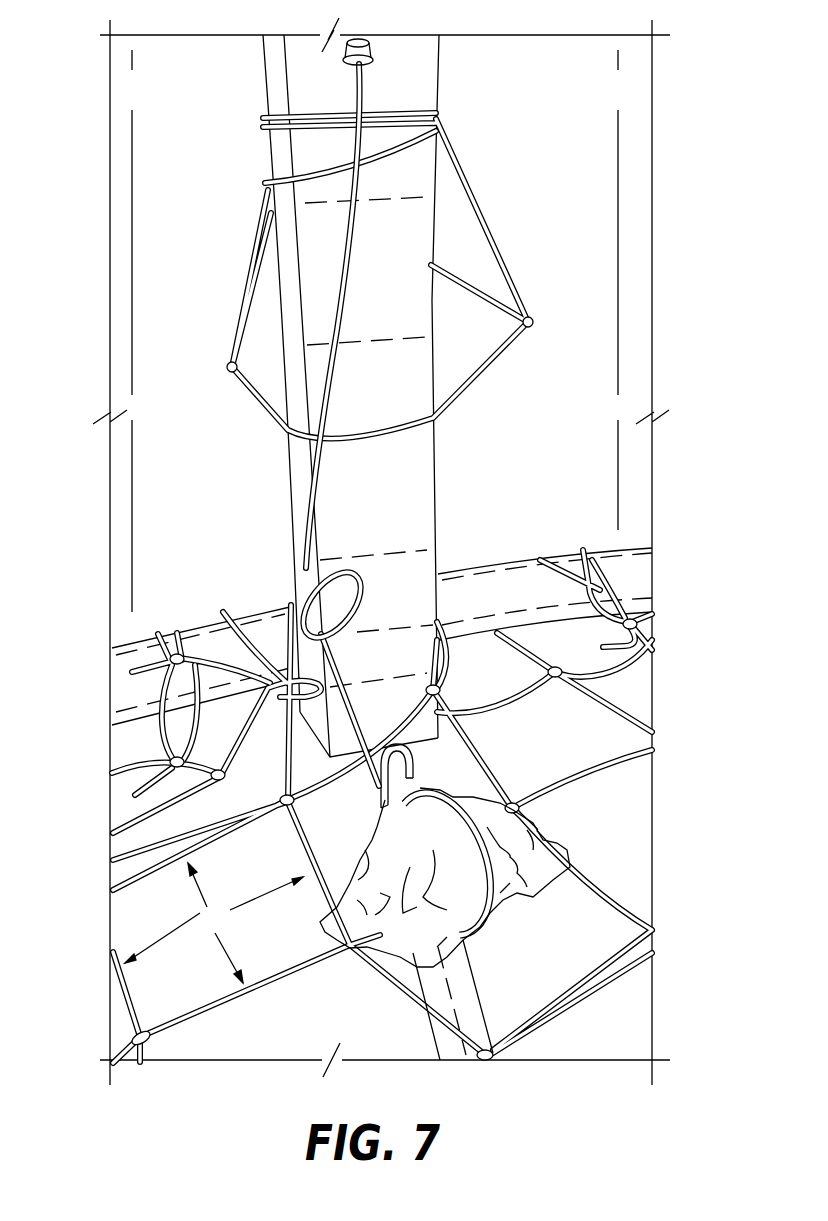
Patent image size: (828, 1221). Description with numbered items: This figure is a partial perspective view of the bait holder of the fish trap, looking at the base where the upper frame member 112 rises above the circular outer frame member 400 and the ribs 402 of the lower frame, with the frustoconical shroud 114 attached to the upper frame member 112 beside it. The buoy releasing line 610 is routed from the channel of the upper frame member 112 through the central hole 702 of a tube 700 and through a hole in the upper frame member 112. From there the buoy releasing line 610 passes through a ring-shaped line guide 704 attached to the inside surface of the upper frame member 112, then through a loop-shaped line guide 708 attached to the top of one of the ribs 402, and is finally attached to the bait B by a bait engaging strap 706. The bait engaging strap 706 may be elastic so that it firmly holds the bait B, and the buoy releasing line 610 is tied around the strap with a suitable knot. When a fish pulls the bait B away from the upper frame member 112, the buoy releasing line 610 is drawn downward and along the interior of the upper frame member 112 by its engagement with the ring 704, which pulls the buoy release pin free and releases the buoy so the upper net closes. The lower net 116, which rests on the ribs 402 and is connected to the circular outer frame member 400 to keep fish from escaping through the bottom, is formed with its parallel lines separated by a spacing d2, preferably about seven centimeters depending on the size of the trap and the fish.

The tube 700 is at (376, 46).
The central hole 702 is at (380, 85).
The buoy releasing line 610 is at (363, 184).
The upper frame member 112 is at (420, 257).
The frustoconical shroud 114 is at (570, 412).
The ring-shaped line guide 704 is at (362, 580).
The circular outer frame member 400 is at (527, 609).
The lower net 116 is at (543, 797).
The loop-shaped line guide 708 is at (380, 760).
The bait engaging strap 706 is at (480, 927).
The rib 402 is at (462, 1016).
The bait B is at (405, 882).
The spacing d2 is at (214, 923).